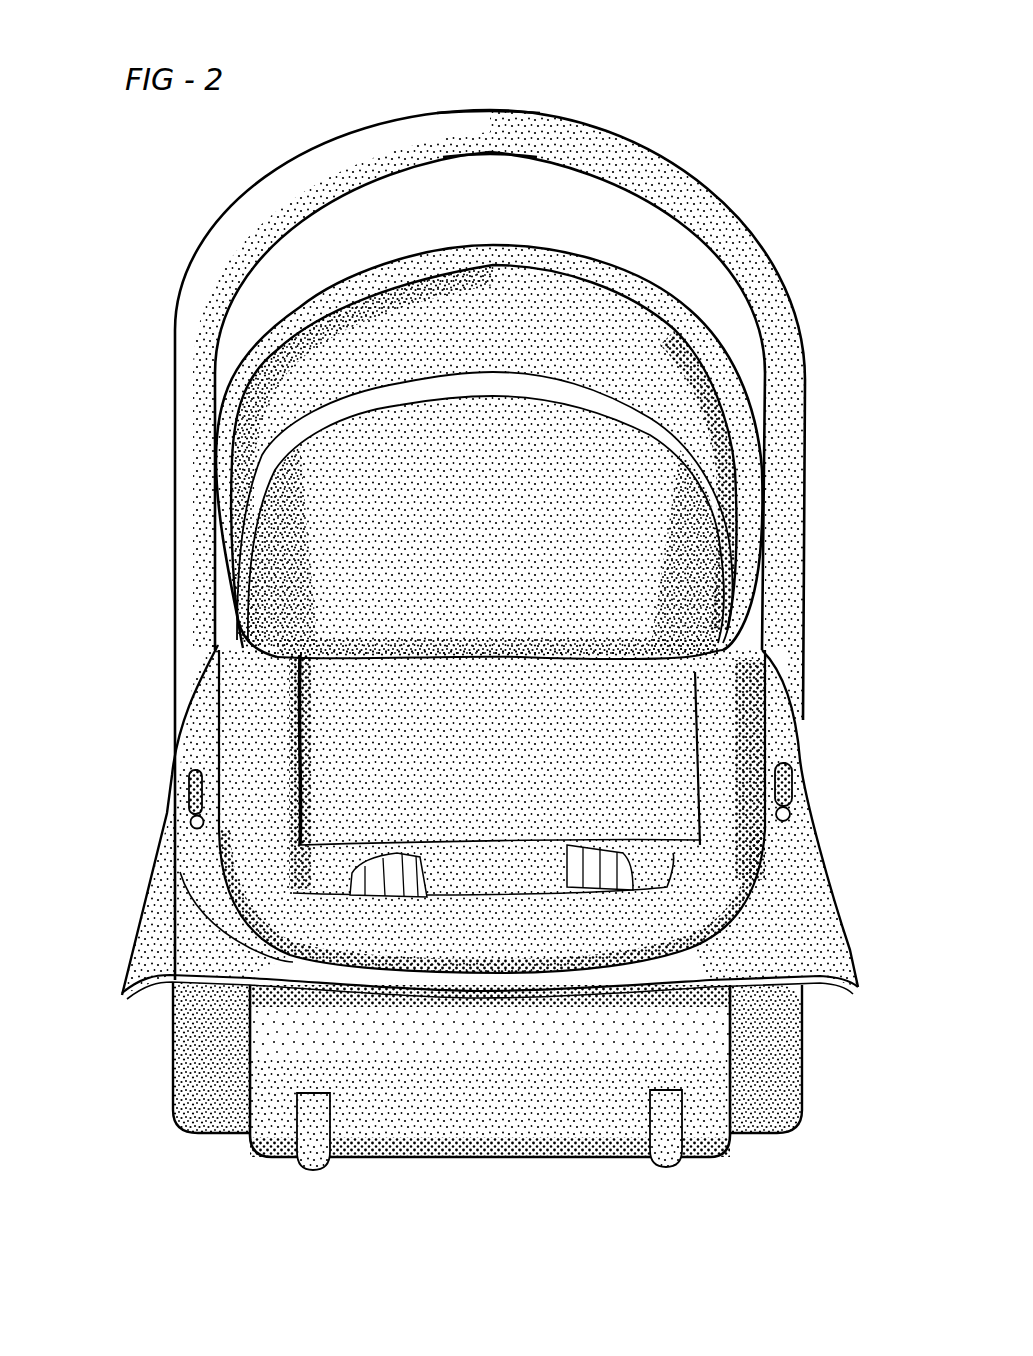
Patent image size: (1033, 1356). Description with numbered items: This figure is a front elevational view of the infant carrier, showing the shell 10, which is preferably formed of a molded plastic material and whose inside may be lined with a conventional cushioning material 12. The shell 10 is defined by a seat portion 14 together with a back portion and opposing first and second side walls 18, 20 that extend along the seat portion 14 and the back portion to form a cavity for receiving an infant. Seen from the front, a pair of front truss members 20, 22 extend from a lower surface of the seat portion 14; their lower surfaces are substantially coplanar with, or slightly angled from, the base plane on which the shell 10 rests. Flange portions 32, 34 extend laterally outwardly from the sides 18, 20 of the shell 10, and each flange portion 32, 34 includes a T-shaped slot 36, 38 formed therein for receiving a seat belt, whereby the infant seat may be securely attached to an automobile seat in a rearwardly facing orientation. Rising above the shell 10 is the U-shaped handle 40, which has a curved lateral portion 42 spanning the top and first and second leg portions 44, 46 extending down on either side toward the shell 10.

The shell 10 is at (434, 1167).
The cushioning material 12 is at (166, 862).
The seat portion 14 is at (510, 1123).
The first side wall 18 is at (735, 1057).
The second side wall / front truss member 20 is at (250, 1047).
The front truss member 22 is at (312, 1170).
The flange portion 32 is at (782, 738).
The flange portion 34 is at (192, 735).
The T-shaped slot 36 is at (797, 792).
The T-shaped slot 38 is at (180, 795).
The U-shaped handle 40 is at (163, 528).
The curved lateral portion 42 is at (466, 120).
The first leg portion 44 is at (805, 428).
The second leg portion 46 is at (192, 402).